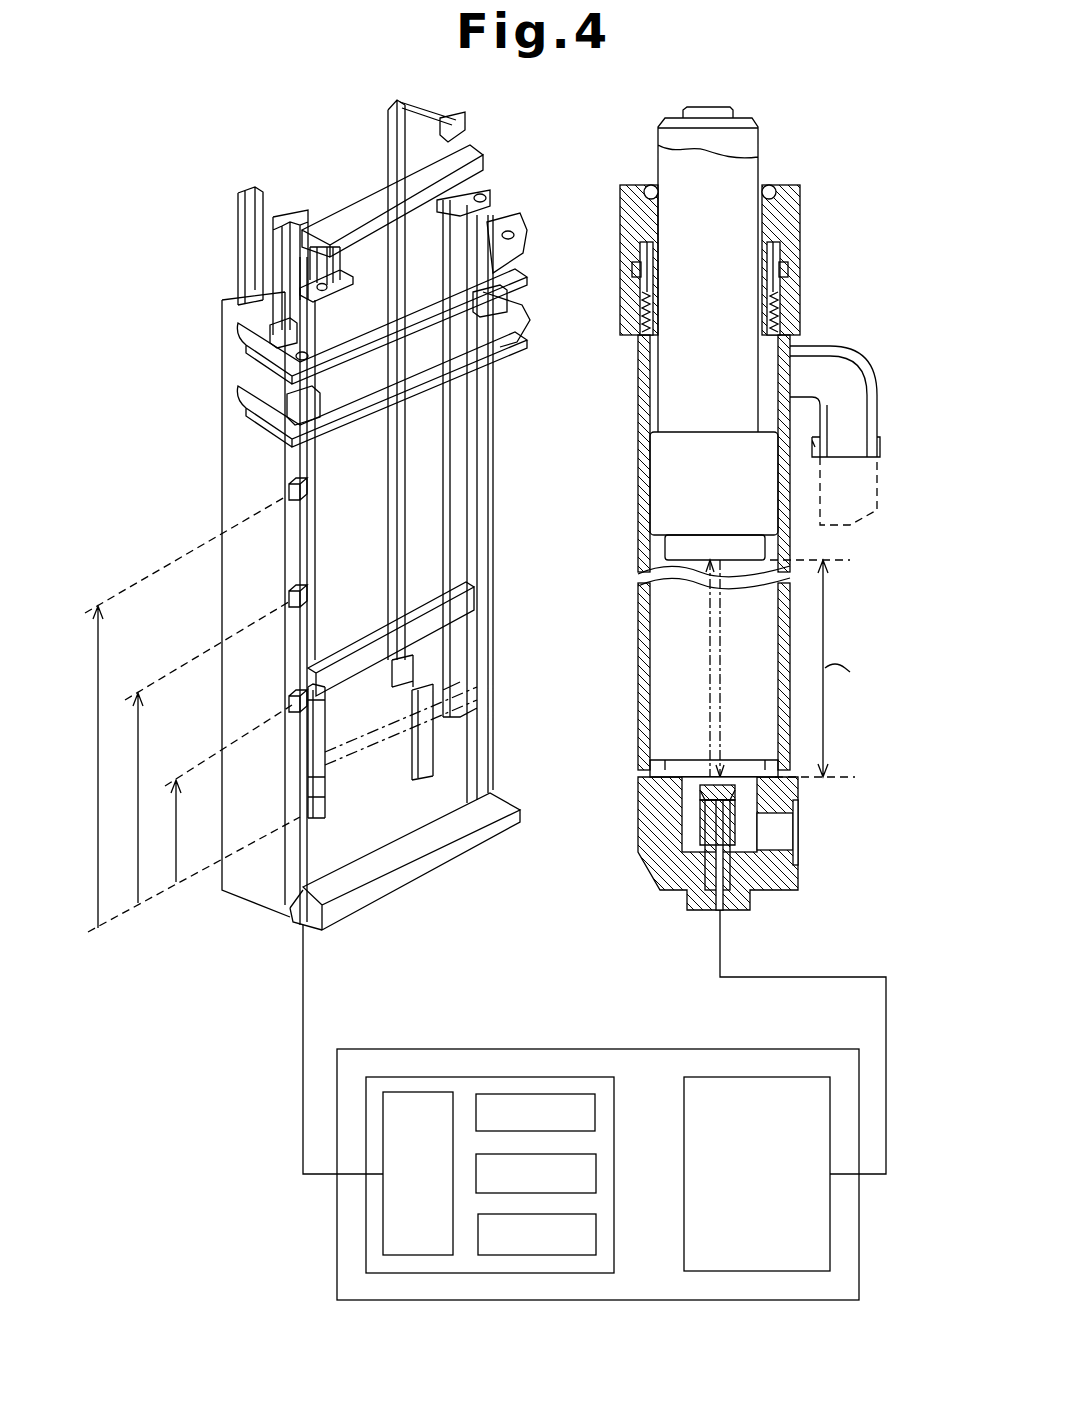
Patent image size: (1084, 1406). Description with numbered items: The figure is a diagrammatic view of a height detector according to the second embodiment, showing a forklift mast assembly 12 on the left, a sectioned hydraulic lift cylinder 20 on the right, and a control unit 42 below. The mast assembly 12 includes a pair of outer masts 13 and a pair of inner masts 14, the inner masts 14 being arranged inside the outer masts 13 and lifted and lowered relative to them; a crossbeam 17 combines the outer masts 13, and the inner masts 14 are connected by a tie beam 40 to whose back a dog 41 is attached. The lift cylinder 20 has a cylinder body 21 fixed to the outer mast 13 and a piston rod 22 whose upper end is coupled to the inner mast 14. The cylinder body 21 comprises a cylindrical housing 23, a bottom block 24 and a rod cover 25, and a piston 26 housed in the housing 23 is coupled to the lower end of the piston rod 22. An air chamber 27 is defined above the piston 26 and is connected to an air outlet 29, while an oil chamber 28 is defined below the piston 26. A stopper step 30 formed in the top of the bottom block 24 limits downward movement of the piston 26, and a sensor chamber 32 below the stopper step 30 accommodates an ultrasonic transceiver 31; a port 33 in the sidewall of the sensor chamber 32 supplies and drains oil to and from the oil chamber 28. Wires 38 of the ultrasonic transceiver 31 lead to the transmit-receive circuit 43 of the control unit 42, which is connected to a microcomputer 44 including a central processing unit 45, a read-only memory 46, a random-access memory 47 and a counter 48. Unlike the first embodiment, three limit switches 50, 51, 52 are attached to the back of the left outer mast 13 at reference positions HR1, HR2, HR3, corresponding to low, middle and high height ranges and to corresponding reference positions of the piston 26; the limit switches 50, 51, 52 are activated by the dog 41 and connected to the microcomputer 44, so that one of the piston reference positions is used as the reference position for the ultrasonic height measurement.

The mast assembly 12 is at (316, 149).
The outer mast 13 is at (232, 437).
The inner mast 14 is at (247, 237).
The crossbeam 17 is at (528, 290).
The hydraulic lift cylinder 20 is at (850, 170).
The cylinder body 21 is at (640, 540).
The piston rod 22 is at (758, 122).
The cylindrical housing 23 is at (640, 662).
The bottom block 24 is at (642, 822).
The rod cover 25 is at (622, 232).
The piston 26 is at (660, 478).
The air chamber 27 is at (645, 372).
The oil chamber 28 is at (648, 600).
The air outlet 29 is at (790, 373).
The stopper step 30 is at (672, 770).
The ultrasonic transceiver 31 is at (705, 782).
The sensor chamber 32 is at (755, 790).
The port 33 is at (800, 850).
The wires 38 is at (886, 1008).
The tie beam 40 is at (472, 612).
The dog 41 is at (323, 700).
The control unit 42 is at (668, 1049).
The transmit-receive circuit 43 is at (832, 1243).
The microcomputer 44 is at (530, 1273).
The central processing unit (CPU) 45 is at (408, 1258).
The read-only memory (ROM) 46 is at (596, 1112).
The random-access memory (RAM) 47 is at (597, 1168).
The counter 48 is at (597, 1232).
The limit switch 50 is at (292, 700).
The limit switch 51 is at (288, 598).
The limit switch 52 is at (288, 490).
The reference position HR1 is at (178, 840).
The reference position HR2 is at (141, 738).
The reference position HR3 is at (100, 655).